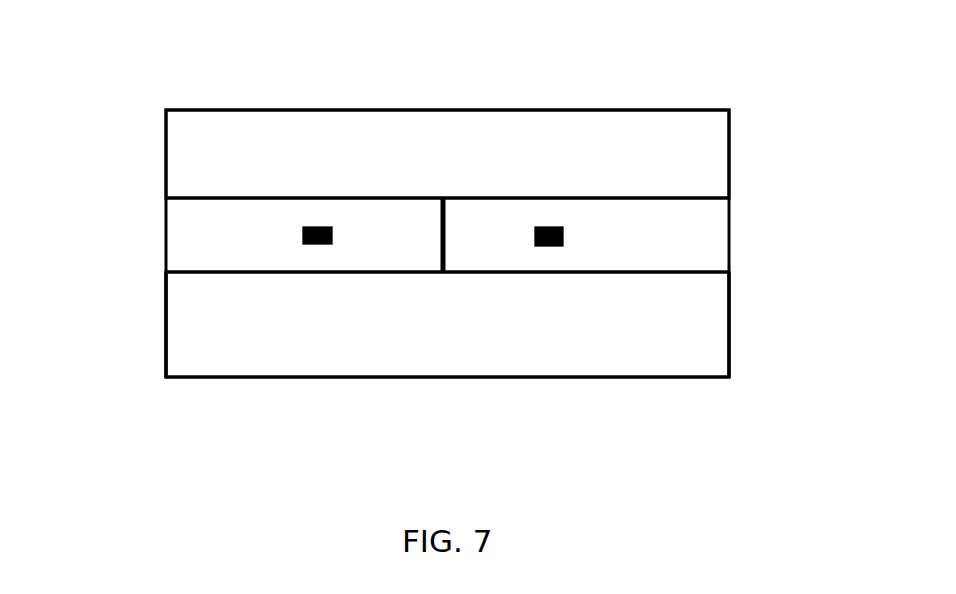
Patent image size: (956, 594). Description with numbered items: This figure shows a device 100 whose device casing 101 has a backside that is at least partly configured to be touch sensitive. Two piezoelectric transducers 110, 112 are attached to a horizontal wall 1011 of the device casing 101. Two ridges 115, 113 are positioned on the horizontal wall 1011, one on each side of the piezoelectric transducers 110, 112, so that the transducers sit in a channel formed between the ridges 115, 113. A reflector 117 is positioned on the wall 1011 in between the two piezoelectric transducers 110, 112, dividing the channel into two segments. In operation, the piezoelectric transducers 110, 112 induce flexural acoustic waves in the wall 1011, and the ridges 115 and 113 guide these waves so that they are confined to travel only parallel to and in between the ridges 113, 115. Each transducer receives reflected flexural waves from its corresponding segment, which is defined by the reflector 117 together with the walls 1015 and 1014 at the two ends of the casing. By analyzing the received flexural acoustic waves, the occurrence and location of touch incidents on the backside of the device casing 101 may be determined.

The device 100 is at (401, 218).
The device casing 101 is at (158, 179).
The ridge 115 is at (507, 203).
The ridge 113 is at (285, 273).
The reflector 117 is at (448, 237).
The piezoelectric transducer 112 is at (303, 236).
The piezoelectric transducer 110 is at (563, 233).
The horizontal wall 1011 is at (623, 355).
The wall 1014 is at (166, 283).
The wall 1015 is at (731, 314).